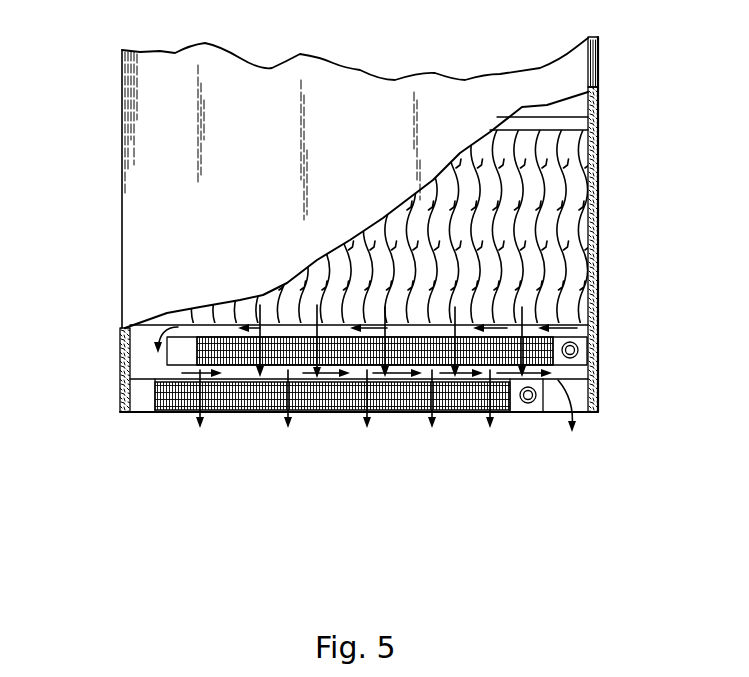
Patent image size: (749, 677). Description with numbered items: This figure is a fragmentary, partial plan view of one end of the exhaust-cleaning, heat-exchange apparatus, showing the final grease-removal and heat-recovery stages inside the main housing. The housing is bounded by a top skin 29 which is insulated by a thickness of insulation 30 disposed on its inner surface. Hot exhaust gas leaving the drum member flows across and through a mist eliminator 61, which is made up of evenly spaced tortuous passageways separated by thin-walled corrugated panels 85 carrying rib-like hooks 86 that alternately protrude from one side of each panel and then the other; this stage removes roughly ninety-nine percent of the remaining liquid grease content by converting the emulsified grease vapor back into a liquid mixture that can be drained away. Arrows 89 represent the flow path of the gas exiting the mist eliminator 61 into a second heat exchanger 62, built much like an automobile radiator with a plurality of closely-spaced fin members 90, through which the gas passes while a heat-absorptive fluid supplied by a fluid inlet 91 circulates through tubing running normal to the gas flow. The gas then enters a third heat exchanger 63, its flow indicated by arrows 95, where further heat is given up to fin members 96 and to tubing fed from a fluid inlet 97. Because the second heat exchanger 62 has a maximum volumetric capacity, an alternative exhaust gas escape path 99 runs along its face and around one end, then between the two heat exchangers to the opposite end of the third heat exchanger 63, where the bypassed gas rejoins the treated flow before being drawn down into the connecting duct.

The top skin 29 is at (172, 72).
The insulation 30 is at (122, 355).
The mist eliminator 61 is at (598, 185).
The second heat exchanger 62 is at (180, 322).
The third heat exchanger 63 is at (477, 407).
The panels 85 is at (287, 283).
The hooks 86 is at (217, 305).
The arrows 89 is at (320, 343).
The fin members 90 is at (592, 323).
The fluid inlet 91 is at (585, 349).
The arrows 95 is at (197, 422).
The fin members 96 is at (422, 408).
The fluid inlet 97 is at (522, 405).
The alternative exhaust gas escape path 99 is at (152, 373).